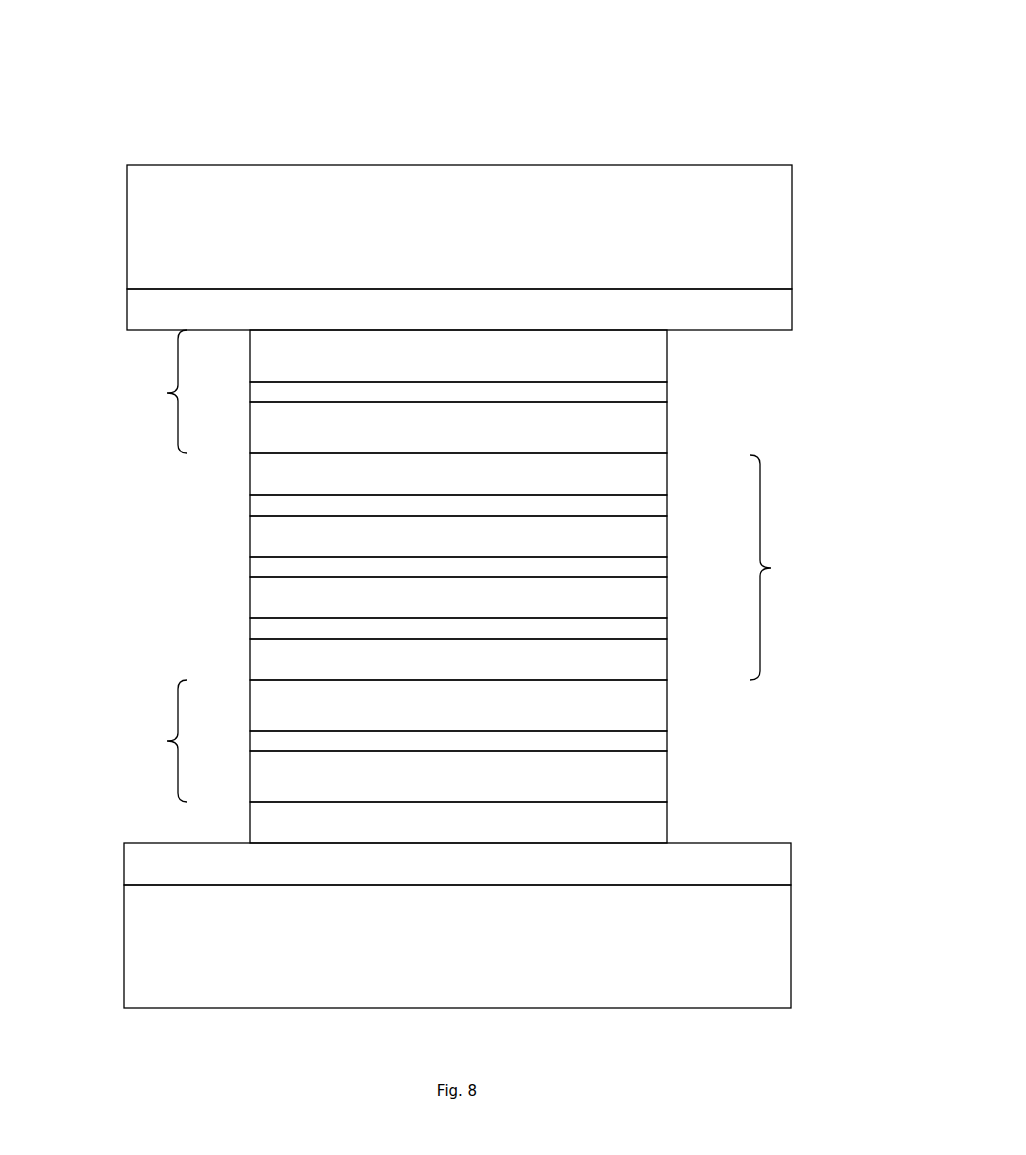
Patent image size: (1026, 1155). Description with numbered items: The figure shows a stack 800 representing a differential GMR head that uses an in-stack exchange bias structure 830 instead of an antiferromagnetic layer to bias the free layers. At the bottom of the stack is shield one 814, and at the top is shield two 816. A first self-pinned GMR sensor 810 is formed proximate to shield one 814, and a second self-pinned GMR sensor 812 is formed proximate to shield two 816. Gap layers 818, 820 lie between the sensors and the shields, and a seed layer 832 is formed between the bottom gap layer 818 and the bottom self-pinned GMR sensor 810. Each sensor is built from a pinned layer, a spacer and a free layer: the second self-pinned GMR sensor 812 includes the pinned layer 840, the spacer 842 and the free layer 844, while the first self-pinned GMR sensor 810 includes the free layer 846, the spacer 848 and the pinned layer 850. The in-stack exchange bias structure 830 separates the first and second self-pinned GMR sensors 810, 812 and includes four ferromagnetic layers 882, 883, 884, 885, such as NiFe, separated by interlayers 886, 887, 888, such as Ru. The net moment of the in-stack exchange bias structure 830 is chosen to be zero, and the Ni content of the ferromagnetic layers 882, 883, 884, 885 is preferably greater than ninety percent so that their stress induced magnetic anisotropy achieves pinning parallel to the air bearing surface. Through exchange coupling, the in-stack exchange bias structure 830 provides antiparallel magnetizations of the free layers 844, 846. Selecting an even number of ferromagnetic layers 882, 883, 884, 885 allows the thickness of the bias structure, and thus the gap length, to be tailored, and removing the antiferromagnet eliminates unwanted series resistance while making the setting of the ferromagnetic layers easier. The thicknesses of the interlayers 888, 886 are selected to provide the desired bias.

The stack 800 is at (184, 78).
The first self-pinned GMR sensor 810 is at (342, 751).
The second self-pinned GMR sensor 812 is at (347, 402).
The shield one 814 is at (791, 926).
The shield two 816 is at (792, 238).
The bottom gap layer 818 is at (791, 865).
The gap layer 820 is at (792, 310).
The in-stack exchange bias structure 830 is at (579, 566).
The seed layer 832 is at (667, 823).
The pinned layer 840 is at (458, 356).
The spacer 842 is at (458, 392).
The free layer 844 is at (458, 427).
The free layer 846 is at (458, 705).
The spacer 848 is at (458, 741).
The pinned layer 850 is at (458, 776).
The ferromagnetic layer 882 is at (458, 659).
The ferromagnetic layer 883 is at (458, 597).
The ferromagnetic layer 884 is at (458, 536).
The ferromagnetic layer 885 is at (458, 474).
The interlayer 886 is at (458, 628).
The interlayer 887 is at (458, 567).
The interlayer 888 is at (458, 505).